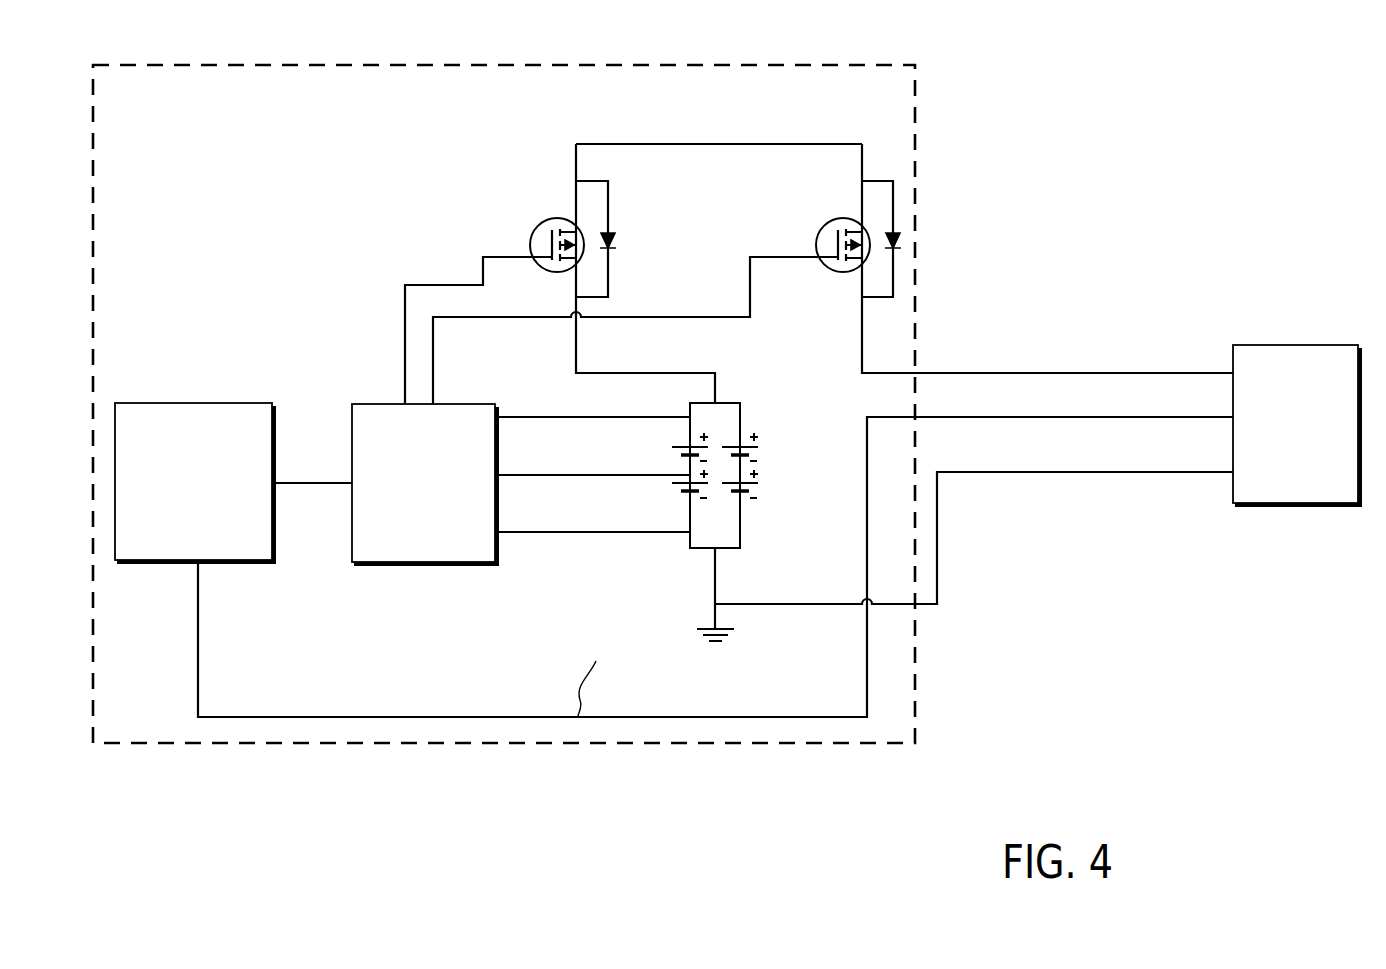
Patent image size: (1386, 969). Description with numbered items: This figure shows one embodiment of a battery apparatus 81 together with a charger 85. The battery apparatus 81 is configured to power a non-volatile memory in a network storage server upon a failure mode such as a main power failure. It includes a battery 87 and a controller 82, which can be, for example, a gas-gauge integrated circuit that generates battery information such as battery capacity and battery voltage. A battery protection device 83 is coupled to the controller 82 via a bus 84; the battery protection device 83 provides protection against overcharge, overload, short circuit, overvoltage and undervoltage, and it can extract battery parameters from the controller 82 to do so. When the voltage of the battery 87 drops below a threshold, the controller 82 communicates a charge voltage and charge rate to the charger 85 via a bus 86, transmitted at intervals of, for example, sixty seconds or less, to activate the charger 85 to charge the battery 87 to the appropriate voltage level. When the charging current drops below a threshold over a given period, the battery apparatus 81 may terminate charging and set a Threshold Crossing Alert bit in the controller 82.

The battery apparatus 81 is at (189, 146).
The controller 82 is at (207, 512).
The battery protection device 83 is at (437, 540).
The bus 84 is at (292, 483).
The charger 85 is at (1307, 458).
The bus 86 is at (1195, 417).
The battery 87 is at (741, 418).